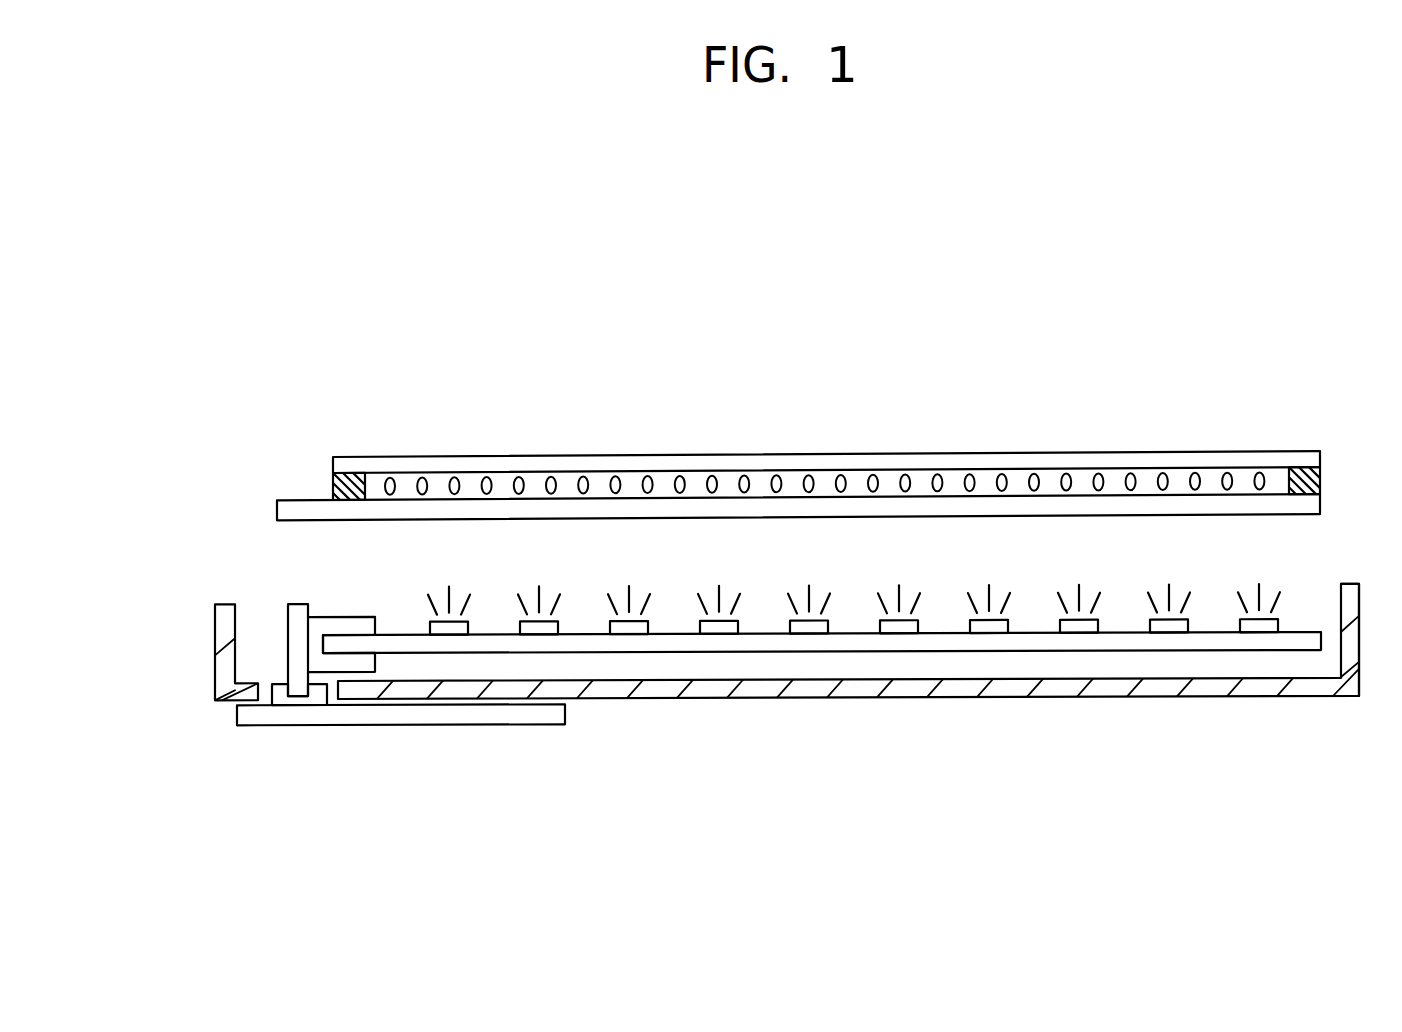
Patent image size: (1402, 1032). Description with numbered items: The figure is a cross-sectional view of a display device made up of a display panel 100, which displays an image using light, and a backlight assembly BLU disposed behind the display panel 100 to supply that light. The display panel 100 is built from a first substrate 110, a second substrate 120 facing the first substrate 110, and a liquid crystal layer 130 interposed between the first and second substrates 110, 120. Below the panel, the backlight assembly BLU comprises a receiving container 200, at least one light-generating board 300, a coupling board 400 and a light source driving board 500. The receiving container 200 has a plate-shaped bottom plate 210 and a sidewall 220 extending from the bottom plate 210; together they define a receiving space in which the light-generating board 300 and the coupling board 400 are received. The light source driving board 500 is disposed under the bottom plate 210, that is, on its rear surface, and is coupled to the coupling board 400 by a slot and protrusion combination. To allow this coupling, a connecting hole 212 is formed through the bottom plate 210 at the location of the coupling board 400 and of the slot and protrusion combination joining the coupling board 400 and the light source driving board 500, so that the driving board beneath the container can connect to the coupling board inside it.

The display panel 100 is at (806, 426).
The first substrate 110 is at (1113, 503).
The second substrate 120 is at (1243, 460).
The liquid crystal layer 130 is at (1182, 483).
The receiving container 200 is at (808, 699).
The bottom plate 210 is at (1301, 698).
The connecting hole 212 is at (332, 702).
The sidewall 220 is at (1370, 652).
The light-generating board 300 is at (1305, 593).
The coupling board 400 is at (279, 619).
The light source driving board 500 is at (418, 729).
The backlight assembly BLU is at (158, 567).